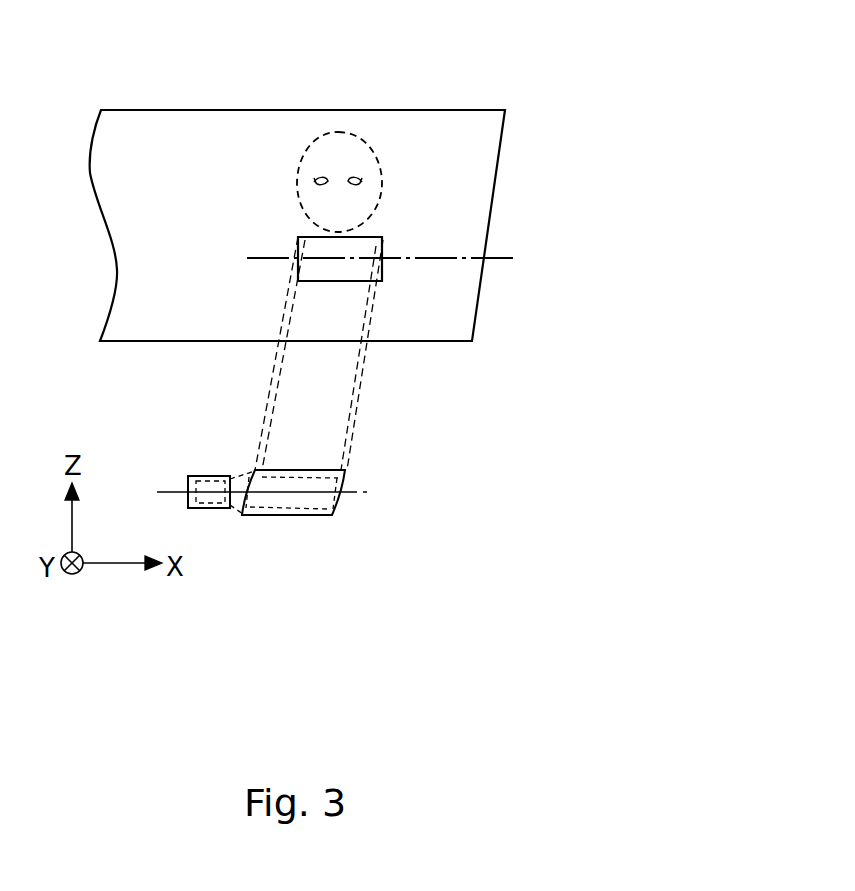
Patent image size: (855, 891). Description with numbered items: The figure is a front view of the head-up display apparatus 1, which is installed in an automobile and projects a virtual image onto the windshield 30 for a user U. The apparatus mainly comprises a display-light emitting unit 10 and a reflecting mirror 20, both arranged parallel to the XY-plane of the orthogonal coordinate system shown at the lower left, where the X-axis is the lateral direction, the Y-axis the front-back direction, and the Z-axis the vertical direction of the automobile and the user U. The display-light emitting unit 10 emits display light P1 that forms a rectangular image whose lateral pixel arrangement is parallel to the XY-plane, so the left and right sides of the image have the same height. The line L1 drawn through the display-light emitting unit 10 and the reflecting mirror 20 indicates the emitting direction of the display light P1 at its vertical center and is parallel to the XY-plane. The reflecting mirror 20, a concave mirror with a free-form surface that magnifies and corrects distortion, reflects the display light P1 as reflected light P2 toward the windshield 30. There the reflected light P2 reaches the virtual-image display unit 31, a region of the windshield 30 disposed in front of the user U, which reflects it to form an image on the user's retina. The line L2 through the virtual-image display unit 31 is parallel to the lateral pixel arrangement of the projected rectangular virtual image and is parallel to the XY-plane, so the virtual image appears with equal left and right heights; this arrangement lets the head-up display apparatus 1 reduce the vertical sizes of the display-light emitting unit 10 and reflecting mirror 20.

The head-up display apparatus 1 is at (320, 627).
The display-light emitting unit 10 is at (193, 476).
The reflecting mirror 20 is at (270, 516).
The windshield 30 is at (453, 118).
The virtual-image display unit 31 is at (300, 237).
The user U is at (343, 130).
The line L1 is at (355, 500).
The line L2 is at (503, 262).
The display light P1 is at (223, 523).
The reflected light P2 is at (367, 420).